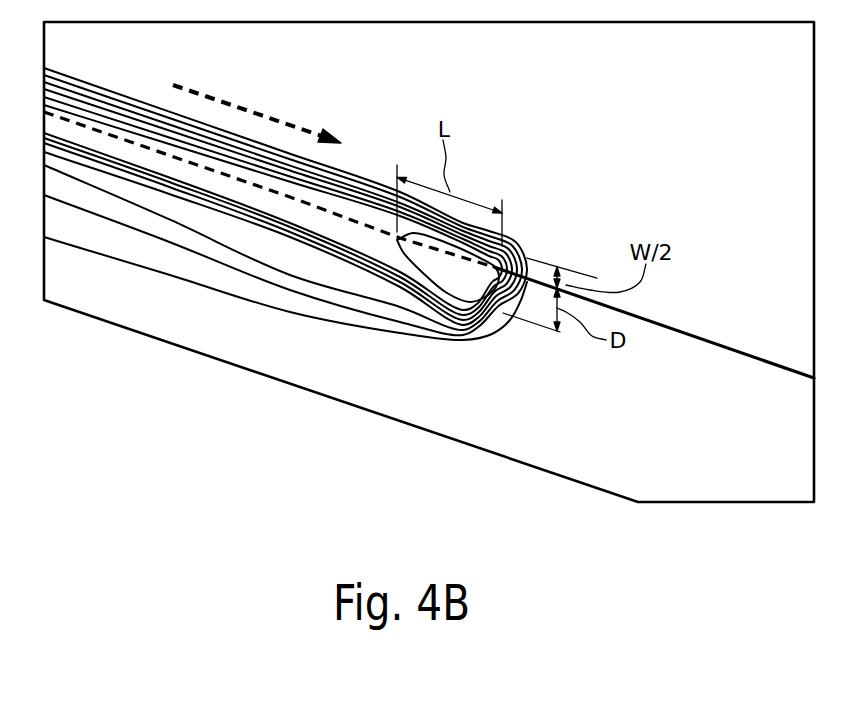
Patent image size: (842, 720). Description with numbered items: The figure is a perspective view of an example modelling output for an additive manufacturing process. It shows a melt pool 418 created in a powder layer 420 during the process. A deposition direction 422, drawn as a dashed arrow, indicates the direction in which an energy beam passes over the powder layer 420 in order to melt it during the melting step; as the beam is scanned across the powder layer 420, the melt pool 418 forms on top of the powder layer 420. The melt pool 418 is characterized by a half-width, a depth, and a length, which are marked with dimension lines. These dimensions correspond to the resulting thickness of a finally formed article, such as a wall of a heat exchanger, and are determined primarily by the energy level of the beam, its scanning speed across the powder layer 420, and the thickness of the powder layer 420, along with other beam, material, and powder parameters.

The melt pool 418 is at (457, 278).
The powder layer 420 is at (764, 306).
The deposition direction 422 is at (276, 122).